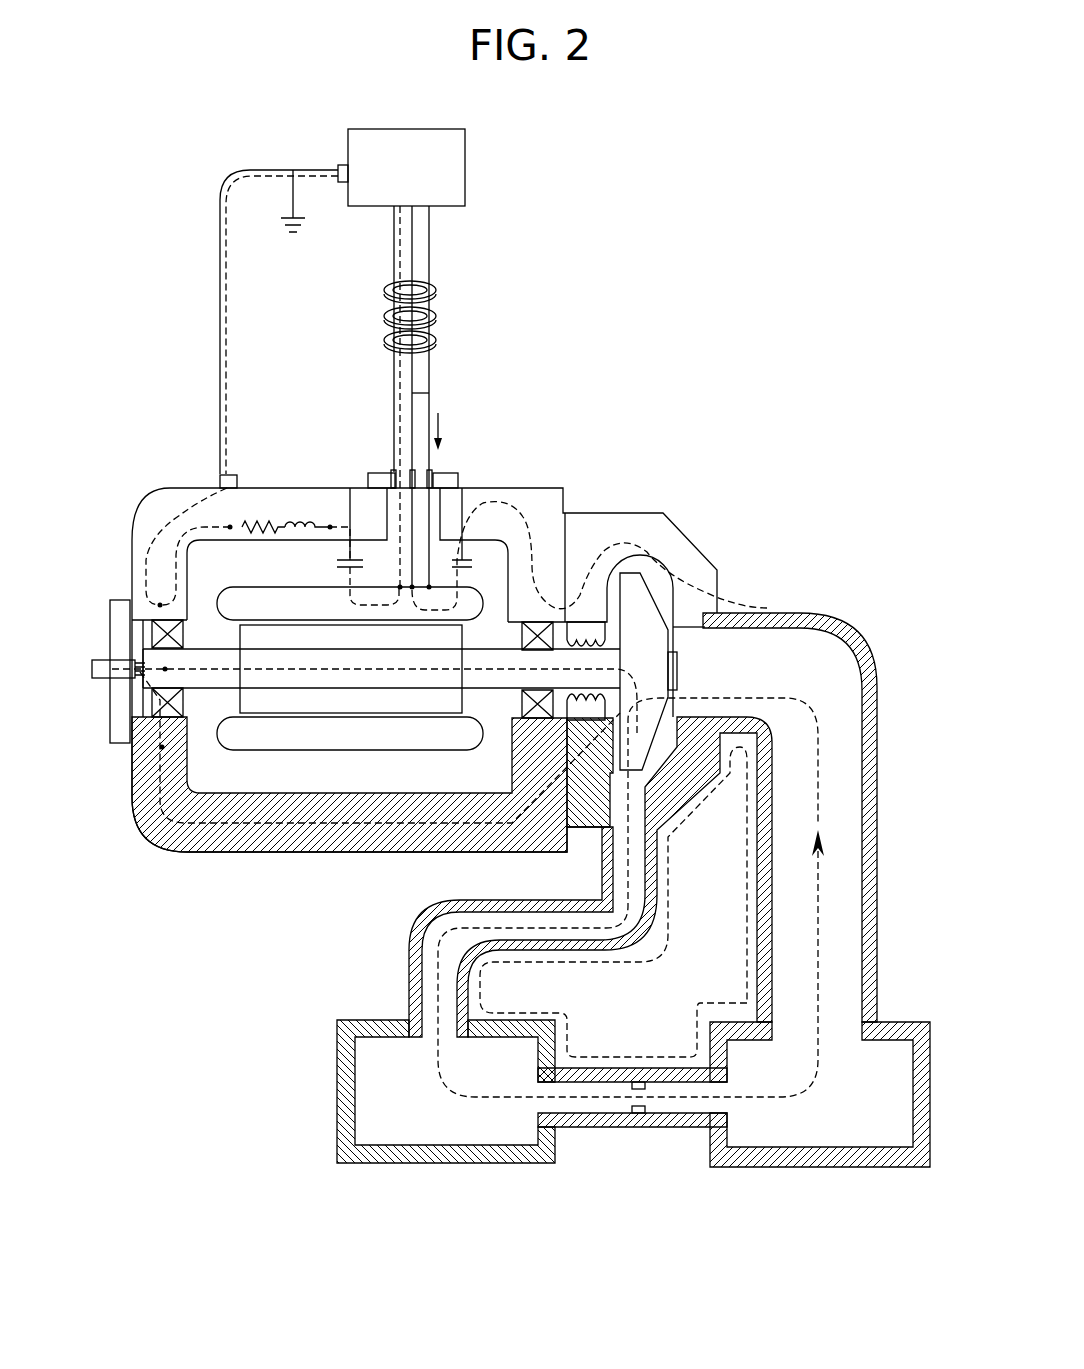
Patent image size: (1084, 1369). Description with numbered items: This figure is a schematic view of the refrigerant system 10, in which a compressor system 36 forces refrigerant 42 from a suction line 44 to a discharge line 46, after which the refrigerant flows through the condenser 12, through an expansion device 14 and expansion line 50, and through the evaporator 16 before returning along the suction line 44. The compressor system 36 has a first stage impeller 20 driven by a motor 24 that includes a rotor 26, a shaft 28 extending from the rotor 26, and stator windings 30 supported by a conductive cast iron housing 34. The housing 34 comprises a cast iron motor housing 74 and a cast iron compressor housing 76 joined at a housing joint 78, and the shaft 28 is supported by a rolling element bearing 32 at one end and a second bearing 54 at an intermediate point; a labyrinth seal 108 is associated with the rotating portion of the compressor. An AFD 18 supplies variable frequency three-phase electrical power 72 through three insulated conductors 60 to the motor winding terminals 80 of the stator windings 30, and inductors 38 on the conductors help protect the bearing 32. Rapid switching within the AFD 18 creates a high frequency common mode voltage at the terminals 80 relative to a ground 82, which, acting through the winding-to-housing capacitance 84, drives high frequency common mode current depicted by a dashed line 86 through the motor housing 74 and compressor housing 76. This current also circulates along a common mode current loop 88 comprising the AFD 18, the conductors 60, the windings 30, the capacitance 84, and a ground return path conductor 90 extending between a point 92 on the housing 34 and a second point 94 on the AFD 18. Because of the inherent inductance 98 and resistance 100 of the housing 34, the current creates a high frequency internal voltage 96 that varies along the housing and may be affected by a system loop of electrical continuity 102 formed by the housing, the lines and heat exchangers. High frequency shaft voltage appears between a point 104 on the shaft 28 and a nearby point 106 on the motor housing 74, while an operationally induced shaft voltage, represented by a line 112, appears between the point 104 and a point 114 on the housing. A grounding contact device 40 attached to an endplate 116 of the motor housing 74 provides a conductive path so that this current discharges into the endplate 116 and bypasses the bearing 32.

The refrigerant system 10 is at (330, 972).
The condenser 12 is at (337, 1085).
The expansion device 14 is at (633, 1118).
The evaporator 16 is at (800, 1167).
The AFD 18 is at (468, 150).
The first stage impeller 20 is at (647, 582).
The motor 24 is at (262, 922).
The rotor 26 is at (415, 718).
The shaft 28 is at (204, 693).
The stator windings 30 is at (337, 752).
The rolling element bearing 32 is at (185, 633).
The cast iron housing 34 is at (547, 488).
The compressor system 36 is at (796, 496).
The inductor 38 is at (437, 341).
The grounding contact device 40 is at (92, 668).
The refrigerant 42 is at (813, 842).
The suction line 44 is at (878, 787).
The discharge line 46 is at (528, 900).
The expansion line 50 is at (588, 1128).
The second bearing 54 is at (522, 700).
The insulated conductors 60 is at (412, 394).
The variable frequency 3-phase electrical power 72 is at (447, 425).
The cast iron motor housing 74 is at (177, 848).
The cast iron compressor housing 76 is at (670, 525).
The housing joint 78 is at (572, 513).
The motor winding terminals 80 is at (381, 455).
The ground 82 is at (290, 195).
The winding-to-housing capacitance 84 is at (350, 487).
The dashed line 86 is at (220, 375).
The common mode current loop 88 is at (196, 247).
The ground return path conductor 90 is at (226, 292).
The point 92 is at (233, 472).
The second point 94 is at (341, 184).
The high frequency internal voltage 96 is at (231, 527).
The inductance 98 is at (300, 530).
The resistance 100 is at (257, 530).
The system loop of electrical continuity 102 is at (580, 963).
The point 104 is at (167, 669).
The point 106 is at (160, 603).
The labyrinth seal 108 is at (605, 633).
The line 112 is at (397, 672).
The point 114 is at (160, 747).
The endplate 116 is at (110, 705).